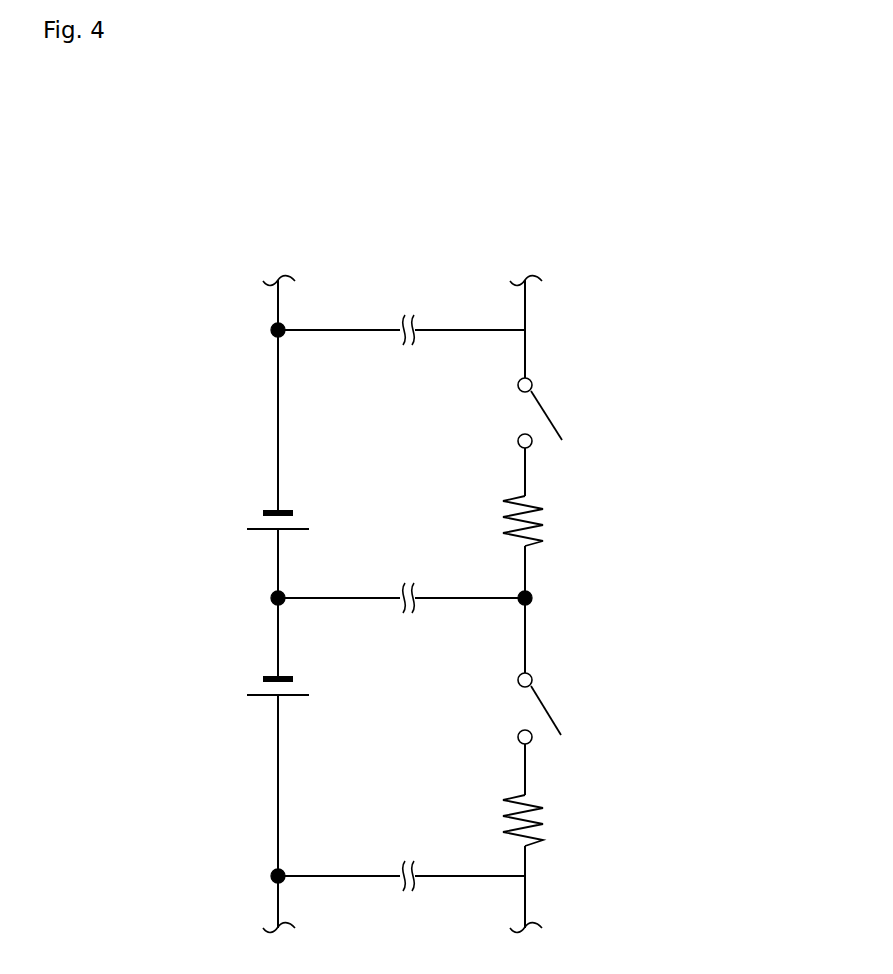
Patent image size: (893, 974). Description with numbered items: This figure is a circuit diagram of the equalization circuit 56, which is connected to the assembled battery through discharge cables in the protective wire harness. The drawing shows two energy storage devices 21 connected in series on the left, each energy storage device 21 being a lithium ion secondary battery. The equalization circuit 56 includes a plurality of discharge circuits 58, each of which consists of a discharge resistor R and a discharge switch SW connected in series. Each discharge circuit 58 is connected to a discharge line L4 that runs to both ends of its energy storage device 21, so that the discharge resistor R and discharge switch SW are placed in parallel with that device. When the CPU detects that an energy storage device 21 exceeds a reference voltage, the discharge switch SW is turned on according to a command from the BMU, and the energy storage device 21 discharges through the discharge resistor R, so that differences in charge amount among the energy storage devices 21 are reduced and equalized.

The equalization circuit 56 is at (705, 322).
The discharge circuit 58 is at (633, 398).
The energy storage device 21 is at (255, 522).
The discharge line L4 is at (364, 328).
The discharge switch SW is at (576, 419).
The discharge resistor R is at (576, 522).